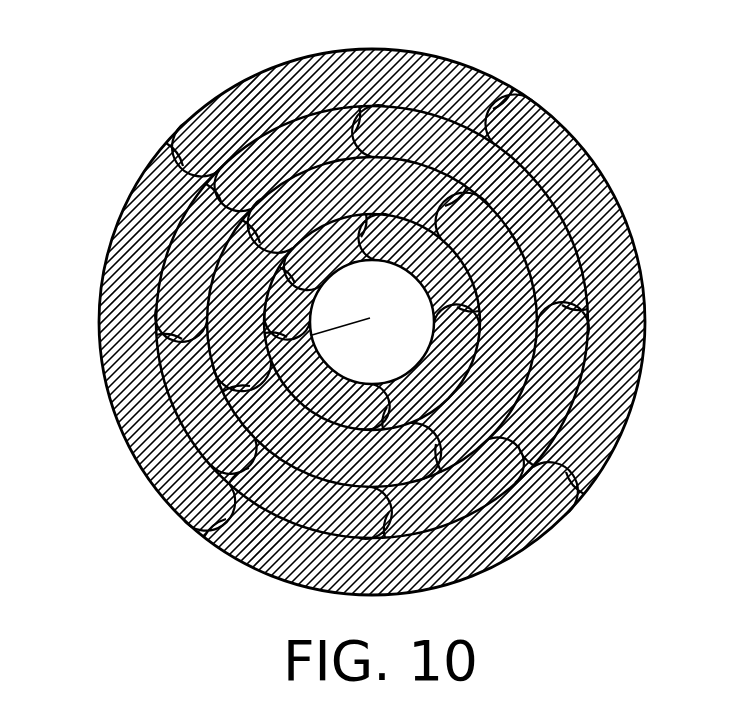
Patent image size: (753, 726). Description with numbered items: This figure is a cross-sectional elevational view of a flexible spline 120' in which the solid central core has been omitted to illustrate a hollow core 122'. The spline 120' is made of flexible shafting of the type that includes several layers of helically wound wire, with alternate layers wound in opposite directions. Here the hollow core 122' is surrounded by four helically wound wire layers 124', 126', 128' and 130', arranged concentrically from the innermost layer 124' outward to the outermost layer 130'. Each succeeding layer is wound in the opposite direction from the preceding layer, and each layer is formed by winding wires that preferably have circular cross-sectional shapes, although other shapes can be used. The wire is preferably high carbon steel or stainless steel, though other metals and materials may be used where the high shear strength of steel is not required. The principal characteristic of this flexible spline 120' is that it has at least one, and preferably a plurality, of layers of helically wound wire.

The spline 120' is at (366, 307).
The hollow core 122' is at (233, 371).
The helically wound wire layer 124' is at (349, 225).
The helically wound wire layer 126' is at (451, 315).
The helically wound wire layer 128' is at (381, 289).
The helically wound wire layer 130' is at (401, 322).